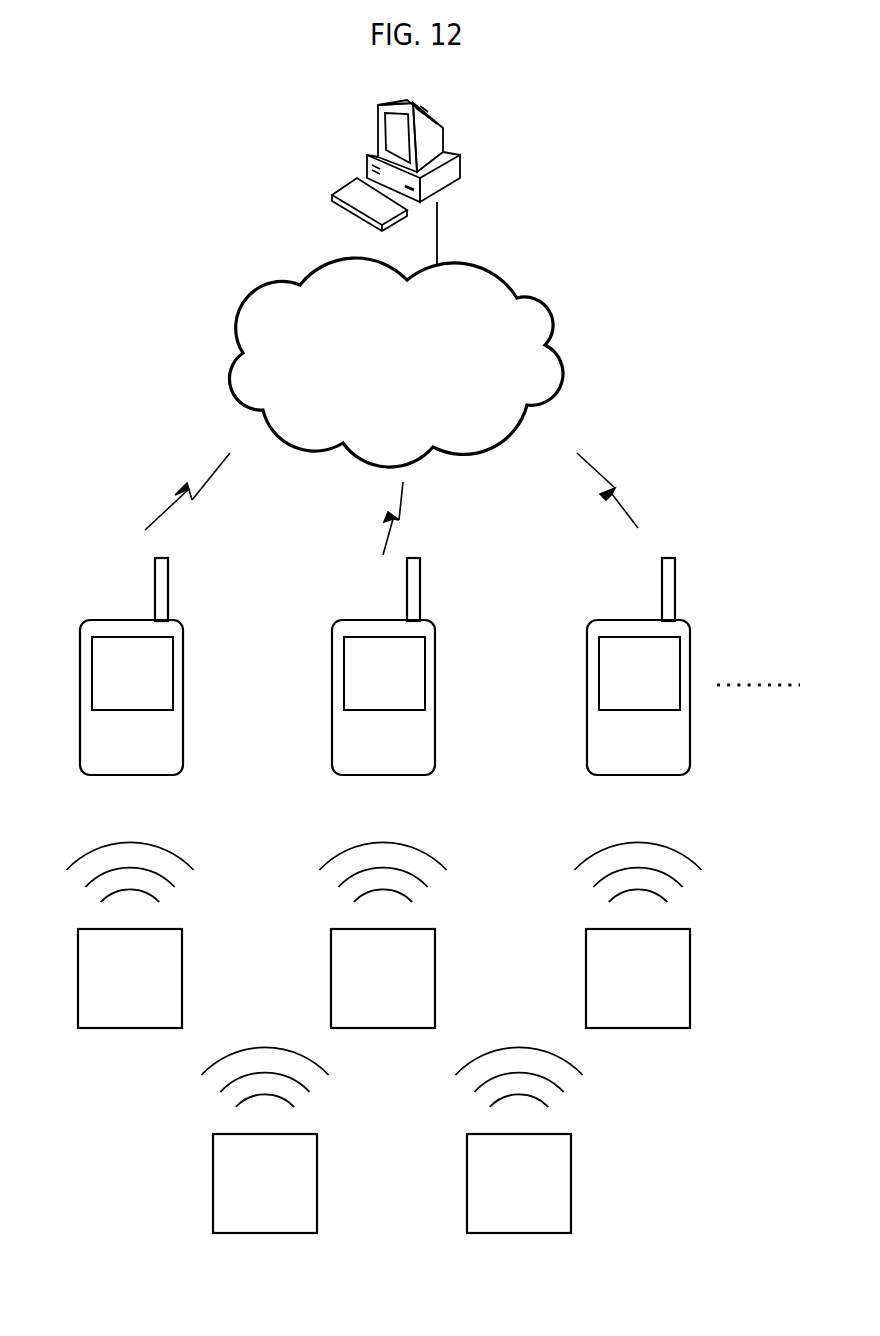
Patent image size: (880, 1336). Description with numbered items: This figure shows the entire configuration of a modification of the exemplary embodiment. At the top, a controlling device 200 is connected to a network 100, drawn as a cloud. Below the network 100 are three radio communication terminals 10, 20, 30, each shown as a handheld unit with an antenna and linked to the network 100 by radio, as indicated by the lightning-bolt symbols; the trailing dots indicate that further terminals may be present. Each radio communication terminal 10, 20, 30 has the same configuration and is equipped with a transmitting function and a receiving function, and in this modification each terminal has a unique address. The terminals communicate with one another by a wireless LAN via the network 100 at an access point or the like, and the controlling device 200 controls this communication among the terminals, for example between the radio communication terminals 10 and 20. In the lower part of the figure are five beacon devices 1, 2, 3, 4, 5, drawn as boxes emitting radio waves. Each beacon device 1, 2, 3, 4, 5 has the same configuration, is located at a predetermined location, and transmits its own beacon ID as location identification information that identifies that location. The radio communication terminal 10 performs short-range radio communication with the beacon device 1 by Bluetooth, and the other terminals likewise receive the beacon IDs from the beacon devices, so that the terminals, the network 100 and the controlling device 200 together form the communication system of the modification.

The controlling device 200 is at (443, 116).
The network 100 is at (497, 270).
The radio communication terminal 10 is at (103, 620).
The radio communication terminal 20 is at (355, 620).
The radio communication terminal 30 is at (610, 620).
The beacon device 1 is at (163, 929).
The beacon device 2 is at (416, 929).
The beacon device 3 is at (671, 929).
The beacon device 4 is at (297, 1134).
The beacon device 5 is at (551, 1134).